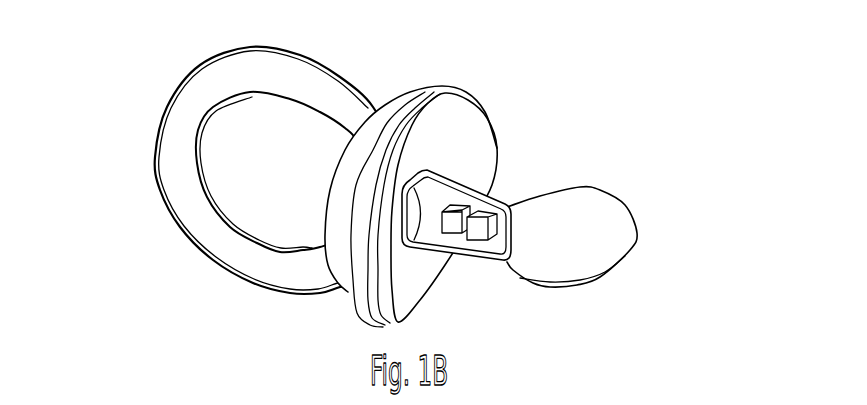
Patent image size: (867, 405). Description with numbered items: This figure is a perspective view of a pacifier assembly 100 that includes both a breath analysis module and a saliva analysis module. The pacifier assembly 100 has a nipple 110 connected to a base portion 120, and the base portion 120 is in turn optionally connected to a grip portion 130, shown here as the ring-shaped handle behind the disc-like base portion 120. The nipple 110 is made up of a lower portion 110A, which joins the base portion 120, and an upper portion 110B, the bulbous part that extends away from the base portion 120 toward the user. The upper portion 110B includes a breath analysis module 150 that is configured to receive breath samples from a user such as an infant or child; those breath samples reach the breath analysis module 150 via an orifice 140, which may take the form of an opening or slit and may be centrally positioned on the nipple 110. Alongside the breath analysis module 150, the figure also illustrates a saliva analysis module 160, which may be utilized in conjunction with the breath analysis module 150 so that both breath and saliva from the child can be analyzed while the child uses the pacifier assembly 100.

The pacifier assembly 100 is at (757, 78).
The nipple 110 is at (587, 204).
The lower portion 110A is at (438, 171).
The upper portion 110B is at (640, 243).
The base portion 120 is at (442, 118).
The grip portion 130 is at (178, 107).
The orifice 140 is at (605, 280).
The breath analysis module 150 is at (449, 233).
The saliva analysis module 160 is at (477, 238).